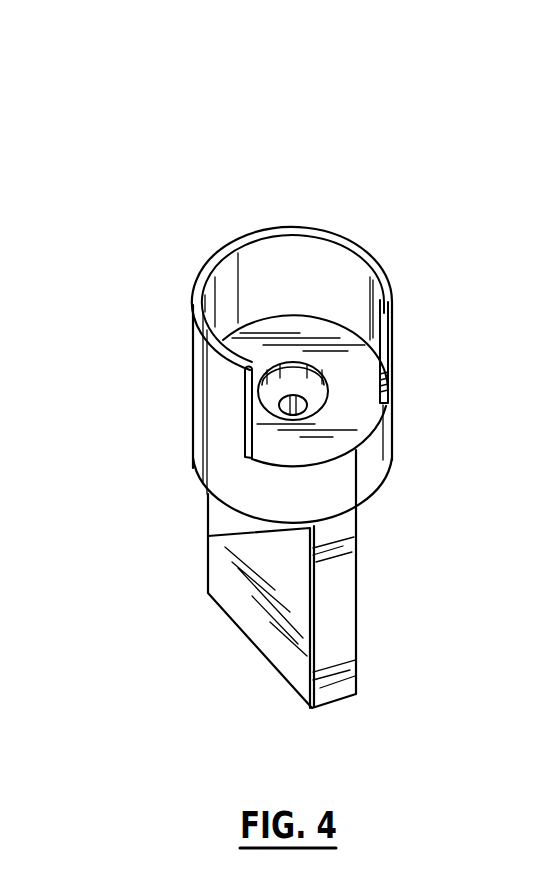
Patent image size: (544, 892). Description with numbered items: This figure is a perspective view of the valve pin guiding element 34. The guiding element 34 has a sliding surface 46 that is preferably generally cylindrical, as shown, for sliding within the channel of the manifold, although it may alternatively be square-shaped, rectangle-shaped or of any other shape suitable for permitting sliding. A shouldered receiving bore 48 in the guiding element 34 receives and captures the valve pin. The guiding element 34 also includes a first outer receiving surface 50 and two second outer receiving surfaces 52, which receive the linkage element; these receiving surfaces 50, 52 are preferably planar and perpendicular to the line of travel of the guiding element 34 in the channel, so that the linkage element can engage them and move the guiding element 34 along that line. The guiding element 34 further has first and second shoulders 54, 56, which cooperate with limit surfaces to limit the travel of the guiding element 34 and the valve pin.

The valve pin guiding element 34 is at (359, 182).
The sliding surface 46 is at (217, 432).
The receiving bore 48 is at (303, 388).
The first outer receiving surface 50 is at (340, 438).
The second outer receiving surfaces 52 is at (236, 537).
The first shoulder 54 is at (347, 252).
The second shoulder 56 is at (278, 668).